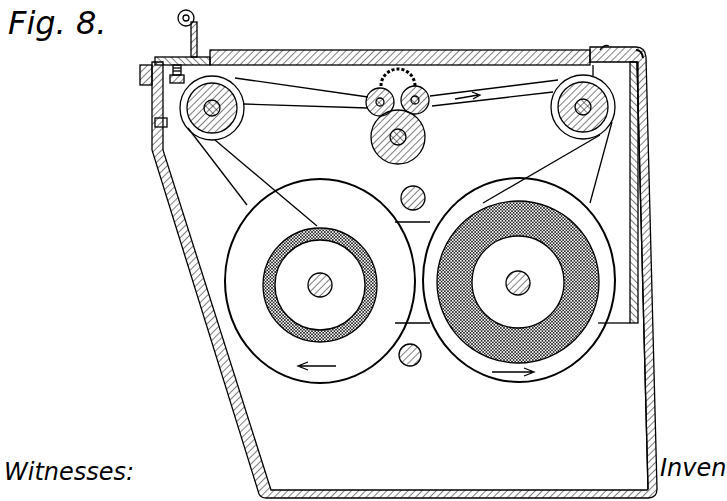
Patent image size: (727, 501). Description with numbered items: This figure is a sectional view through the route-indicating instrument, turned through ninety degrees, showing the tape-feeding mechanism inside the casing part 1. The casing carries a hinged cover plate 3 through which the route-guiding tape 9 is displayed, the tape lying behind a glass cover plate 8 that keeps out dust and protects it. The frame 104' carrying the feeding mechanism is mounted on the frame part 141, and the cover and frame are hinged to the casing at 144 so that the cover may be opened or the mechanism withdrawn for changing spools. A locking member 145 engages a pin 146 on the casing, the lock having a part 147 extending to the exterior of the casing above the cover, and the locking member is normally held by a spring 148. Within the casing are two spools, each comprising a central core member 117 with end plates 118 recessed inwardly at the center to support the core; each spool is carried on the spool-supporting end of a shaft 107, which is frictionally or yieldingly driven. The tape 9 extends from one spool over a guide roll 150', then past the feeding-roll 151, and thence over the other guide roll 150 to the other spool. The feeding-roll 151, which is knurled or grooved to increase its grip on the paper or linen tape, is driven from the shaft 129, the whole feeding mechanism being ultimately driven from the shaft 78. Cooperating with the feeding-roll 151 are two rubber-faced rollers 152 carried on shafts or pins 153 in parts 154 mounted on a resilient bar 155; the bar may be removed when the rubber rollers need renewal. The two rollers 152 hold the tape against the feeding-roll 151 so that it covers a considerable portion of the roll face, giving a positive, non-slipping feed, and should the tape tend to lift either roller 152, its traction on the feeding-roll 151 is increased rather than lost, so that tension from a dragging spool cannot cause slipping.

The casing part 1 is at (651, 392).
The cover plate 3 is at (609, 38).
The glass cover plate 8 is at (286, 58).
The tape 9 is at (471, 103).
The shaft 78 is at (406, 366).
The frame 104' is at (671, 275).
The shaft 107 is at (324, 268).
The central core member 117 is at (320, 232).
The end plates 118 is at (238, 257).
The shaft 129 is at (392, 142).
The frame part 141 is at (640, 140).
The hinge 144 is at (641, 61).
The locking member 145 is at (151, 97).
The pin 146 is at (155, 123).
The lock part 147 is at (198, 38).
The spring 148 is at (186, 58).
The guide roll 150 is at (557, 107).
The guide roll 150' is at (224, 116).
The feeding-roll 151 is at (416, 152).
The rollers 152 is at (414, 86).
The shafts or pins 153 is at (379, 118).
The parts 154 is at (380, 88).
The bar 155 is at (398, 80).